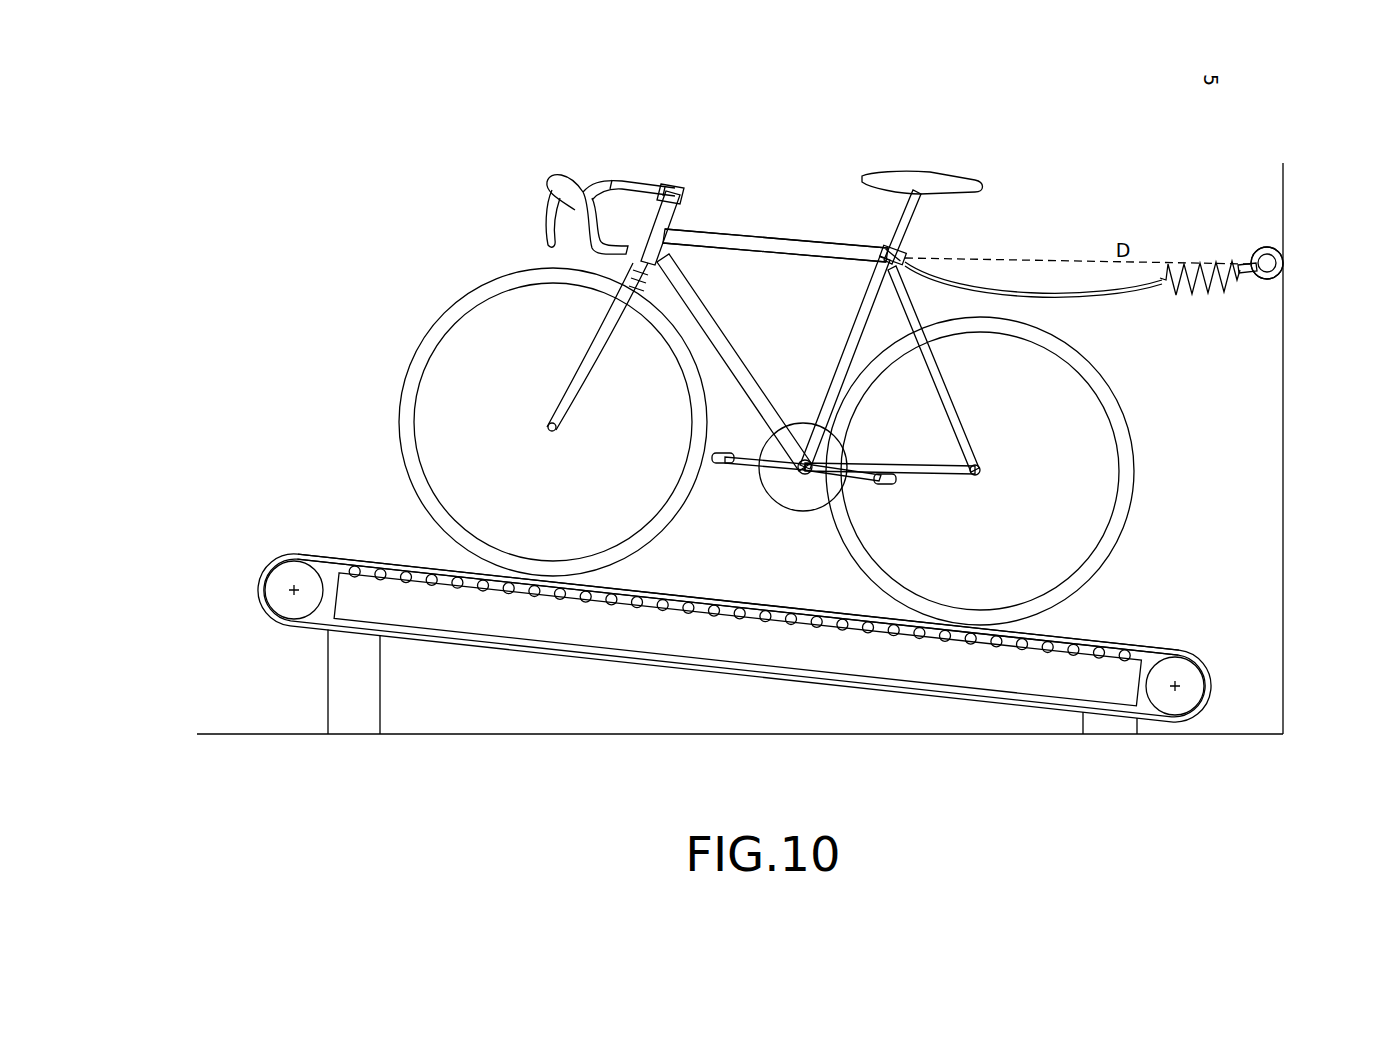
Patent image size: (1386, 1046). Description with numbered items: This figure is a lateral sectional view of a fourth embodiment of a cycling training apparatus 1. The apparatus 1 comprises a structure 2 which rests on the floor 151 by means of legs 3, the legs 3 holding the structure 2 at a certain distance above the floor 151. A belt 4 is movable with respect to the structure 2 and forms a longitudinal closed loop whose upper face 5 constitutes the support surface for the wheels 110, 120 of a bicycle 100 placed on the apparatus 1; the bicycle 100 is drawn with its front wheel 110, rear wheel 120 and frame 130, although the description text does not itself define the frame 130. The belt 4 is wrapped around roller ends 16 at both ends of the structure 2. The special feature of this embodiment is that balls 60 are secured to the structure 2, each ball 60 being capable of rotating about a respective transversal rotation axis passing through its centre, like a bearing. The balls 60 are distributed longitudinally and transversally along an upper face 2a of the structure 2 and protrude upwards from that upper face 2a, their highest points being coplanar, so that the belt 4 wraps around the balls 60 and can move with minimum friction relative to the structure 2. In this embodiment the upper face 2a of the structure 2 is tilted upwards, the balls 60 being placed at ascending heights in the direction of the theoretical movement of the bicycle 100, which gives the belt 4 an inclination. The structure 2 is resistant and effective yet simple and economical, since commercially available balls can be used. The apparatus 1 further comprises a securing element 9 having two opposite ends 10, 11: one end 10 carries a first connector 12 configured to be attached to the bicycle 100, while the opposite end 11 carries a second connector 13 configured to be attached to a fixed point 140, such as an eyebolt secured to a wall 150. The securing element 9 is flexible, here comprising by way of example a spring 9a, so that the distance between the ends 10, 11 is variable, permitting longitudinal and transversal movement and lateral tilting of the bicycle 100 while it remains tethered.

The cycling training apparatus 1 is at (250, 322).
The structure 2 is at (553, 620).
The upper face of the structure 2a is at (413, 565).
The legs 3 is at (357, 737).
The belt 4 is at (292, 552).
The upper face of the belt 5 is at (335, 555).
The securing element 9 is at (1032, 277).
The spring 9a is at (1196, 268).
The end of the securing element 10 is at (915, 246).
The opposite end of the securing element 11 is at (1272, 292).
The first connector 12 is at (868, 247).
The second connector 13 is at (1243, 262).
The roller ends 16 is at (265, 590).
The balls 60 is at (375, 566).
The bicycle 100 is at (503, 248).
The front wheel 110 is at (452, 304).
The rear wheel 120 is at (1113, 382).
The top tube 130 is at (762, 235).
The fixed point 140 is at (1257, 247).
The wall 150 is at (1275, 465).
The floor 151 is at (213, 733).